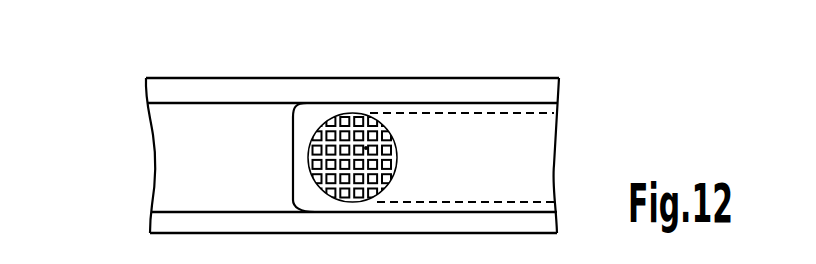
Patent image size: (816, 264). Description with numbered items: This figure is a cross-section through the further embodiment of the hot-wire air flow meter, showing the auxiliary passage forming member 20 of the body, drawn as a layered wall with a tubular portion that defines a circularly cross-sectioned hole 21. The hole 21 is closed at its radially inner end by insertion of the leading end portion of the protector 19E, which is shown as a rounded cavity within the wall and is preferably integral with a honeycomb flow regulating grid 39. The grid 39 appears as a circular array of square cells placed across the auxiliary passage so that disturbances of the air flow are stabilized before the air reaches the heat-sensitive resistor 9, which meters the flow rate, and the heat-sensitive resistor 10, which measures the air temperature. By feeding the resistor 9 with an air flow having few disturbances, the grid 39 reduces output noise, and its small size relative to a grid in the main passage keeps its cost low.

The auxiliary passage forming member 20 is at (558, 101).
The circularly cross-sectioned hole 21 is at (155, 112).
The protector 19E is at (290, 167).
The honeycomb flow regulating grid 39 is at (334, 119).
The heat-sensitive resistor 9 is at (346, 117).
The heat-sensitive resistor 10 is at (366, 147).